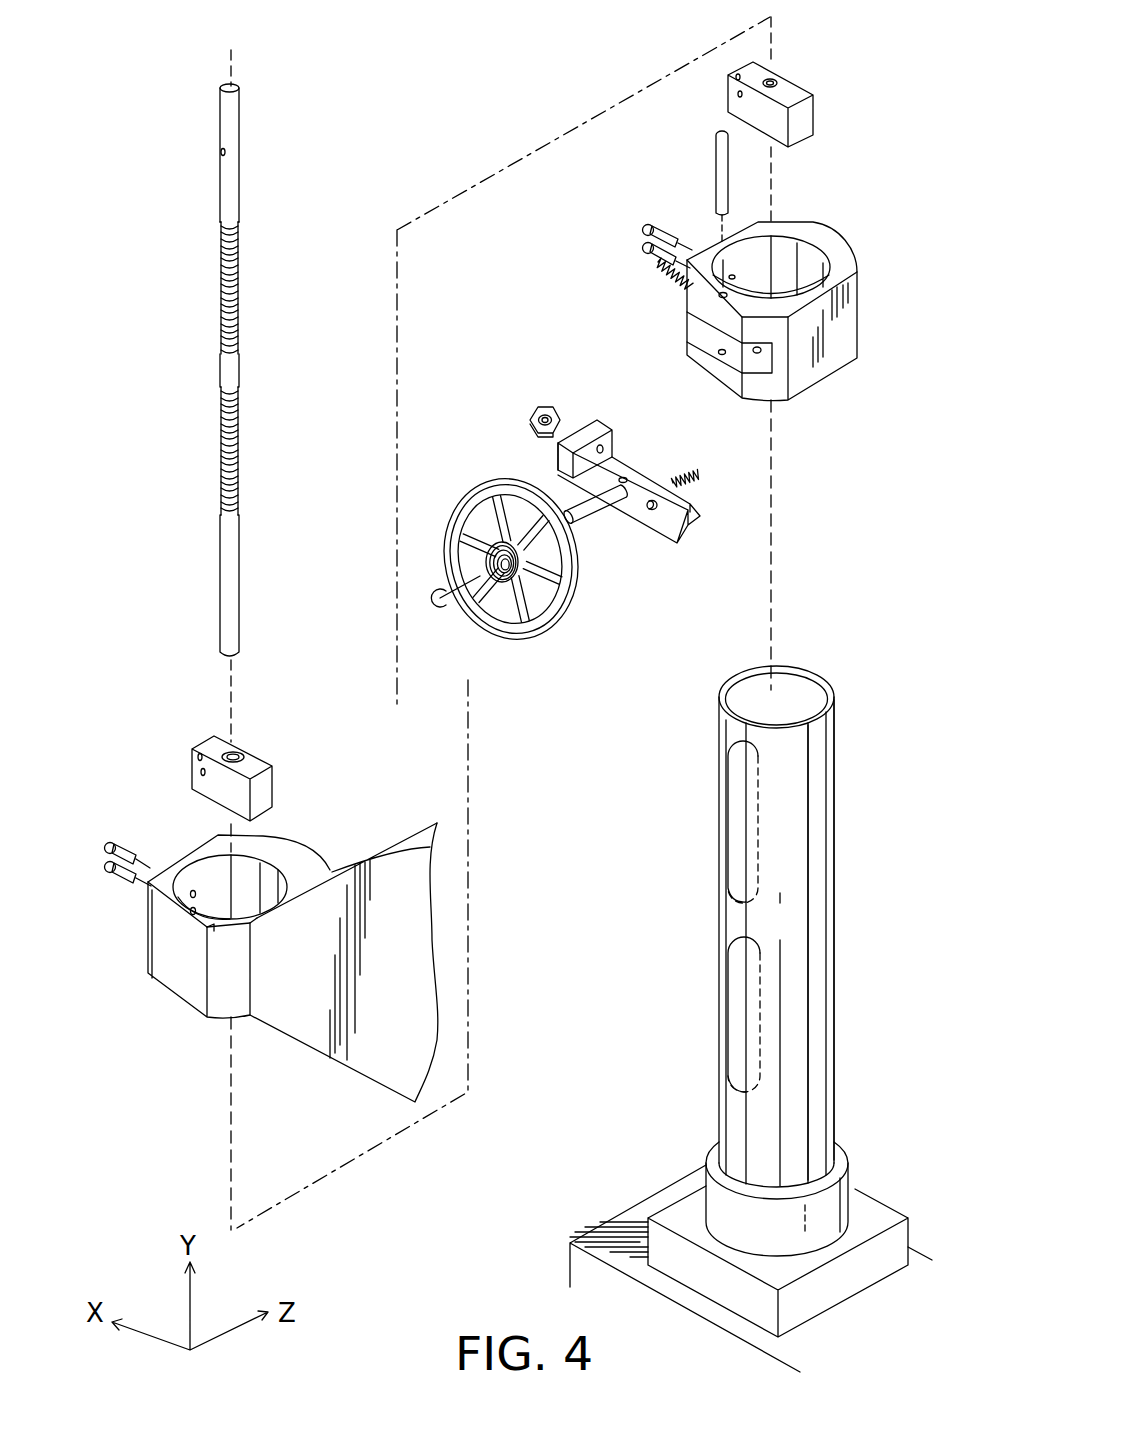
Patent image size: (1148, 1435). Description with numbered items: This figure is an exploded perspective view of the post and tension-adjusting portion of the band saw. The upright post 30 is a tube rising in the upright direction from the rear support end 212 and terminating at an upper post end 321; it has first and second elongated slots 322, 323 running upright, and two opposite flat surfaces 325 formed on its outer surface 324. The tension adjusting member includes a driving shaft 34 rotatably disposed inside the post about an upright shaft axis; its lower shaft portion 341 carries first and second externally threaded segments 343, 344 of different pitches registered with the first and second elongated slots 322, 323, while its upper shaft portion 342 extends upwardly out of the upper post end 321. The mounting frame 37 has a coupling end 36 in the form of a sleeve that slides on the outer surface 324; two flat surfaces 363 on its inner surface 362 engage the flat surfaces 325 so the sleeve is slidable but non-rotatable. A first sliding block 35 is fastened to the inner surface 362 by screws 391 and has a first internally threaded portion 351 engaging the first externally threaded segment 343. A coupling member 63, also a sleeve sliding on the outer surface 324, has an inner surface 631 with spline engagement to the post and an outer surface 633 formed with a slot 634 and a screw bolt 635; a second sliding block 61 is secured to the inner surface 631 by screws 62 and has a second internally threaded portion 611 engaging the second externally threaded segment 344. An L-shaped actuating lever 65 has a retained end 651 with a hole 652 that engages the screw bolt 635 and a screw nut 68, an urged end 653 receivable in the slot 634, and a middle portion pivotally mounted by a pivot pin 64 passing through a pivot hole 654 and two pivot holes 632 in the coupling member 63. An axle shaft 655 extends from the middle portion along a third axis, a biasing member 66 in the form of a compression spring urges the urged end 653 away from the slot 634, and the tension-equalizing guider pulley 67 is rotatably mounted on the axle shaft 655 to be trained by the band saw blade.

The upright post 30 is at (773, 972).
The upper post end 321 is at (820, 735).
The first elongated slot 322 is at (740, 837).
The second elongated slot 323 is at (742, 1035).
The outer surface 324 is at (810, 973).
The flat surfaces 325 is at (800, 672).
The driving shaft 34 is at (284, 396).
The lower shaft portion 341 is at (240, 568).
The upper shaft portion 342 is at (236, 130).
The first externally threaded segment 343 is at (238, 245).
The second externally threaded segment 344 is at (240, 432).
The first sliding block 35 is at (238, 736).
The first internally threaded portion 351 is at (240, 755).
The coupling end 36 is at (244, 976).
The inner surface 362 is at (213, 863).
The flat surfaces 363 is at (278, 876).
The mounting frame 37 is at (383, 877).
The screws 391 is at (113, 878).
The second sliding block 61 is at (749, 119).
The second internally threaded portion 611 is at (737, 88).
The screws 62 is at (648, 226).
The coupling member 63 is at (748, 415).
The inner surface 631 is at (787, 245).
The pivot holes 632 is at (752, 348).
The outer surface 633 is at (768, 388).
The slot 634 is at (718, 346).
The screw bolt 635 is at (658, 265).
The pivot pin 64 is at (714, 165).
The L-shaped actuating lever 65 is at (588, 483).
The retained end 651 is at (590, 428).
The hole 652 is at (604, 448).
The urged end 653 is at (650, 510).
The pivot hole 654 is at (630, 490).
The axle shaft 655 is at (565, 482).
The biasing member 66 is at (695, 490).
The tension-equalizing guider pulley 67 is at (512, 640).
The screw nut 68 is at (534, 412).
The rear support end 212 is at (568, 1245).